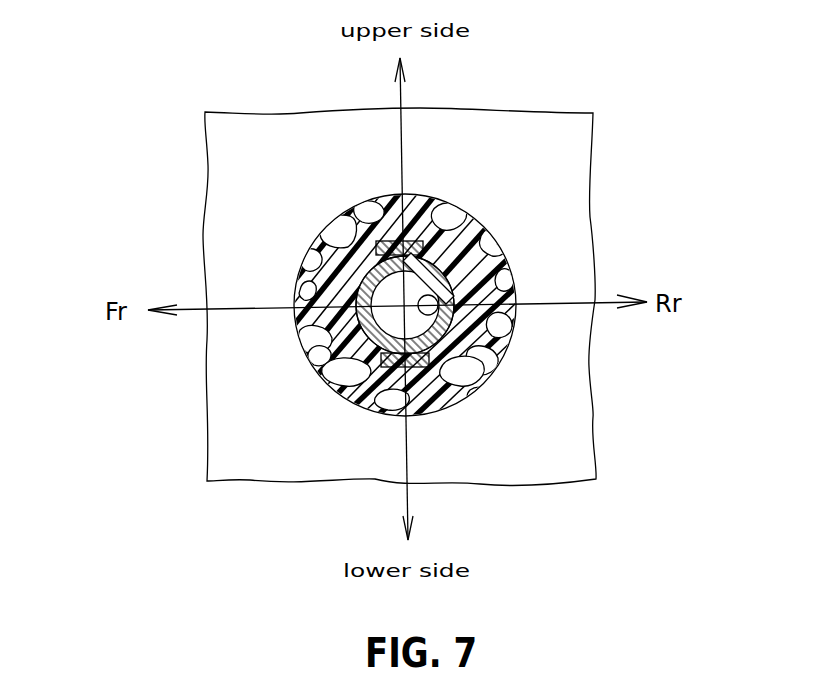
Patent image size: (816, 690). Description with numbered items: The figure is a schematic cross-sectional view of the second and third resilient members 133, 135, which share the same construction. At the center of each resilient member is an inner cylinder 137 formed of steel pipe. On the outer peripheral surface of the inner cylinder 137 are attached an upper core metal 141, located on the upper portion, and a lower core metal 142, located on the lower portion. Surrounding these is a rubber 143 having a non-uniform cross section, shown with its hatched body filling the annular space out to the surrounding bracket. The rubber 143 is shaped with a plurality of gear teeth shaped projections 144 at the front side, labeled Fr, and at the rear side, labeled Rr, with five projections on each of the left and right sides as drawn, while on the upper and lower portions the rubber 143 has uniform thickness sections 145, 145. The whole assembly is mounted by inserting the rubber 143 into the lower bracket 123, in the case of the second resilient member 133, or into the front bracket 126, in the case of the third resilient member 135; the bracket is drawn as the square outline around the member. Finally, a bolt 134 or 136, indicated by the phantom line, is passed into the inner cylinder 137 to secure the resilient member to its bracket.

The lower bracket 123 is at (498, 297).
The front bracket 126 is at (550, 175).
The upper core metal 141 is at (373, 202).
The bolt 134 is at (573, 336).
The bolt 136 is at (455, 325).
The rubber having a non-uniform cross section 143 is at (318, 242).
The uniform thickness section 145 is at (418, 202).
The gear teeth shaped projection 144 is at (503, 266).
The inner cylinder 137 is at (320, 360).
The second resilient member 133 is at (197, 448).
The third resilient member 135 is at (312, 403).
The lower core metal 142 is at (440, 409).